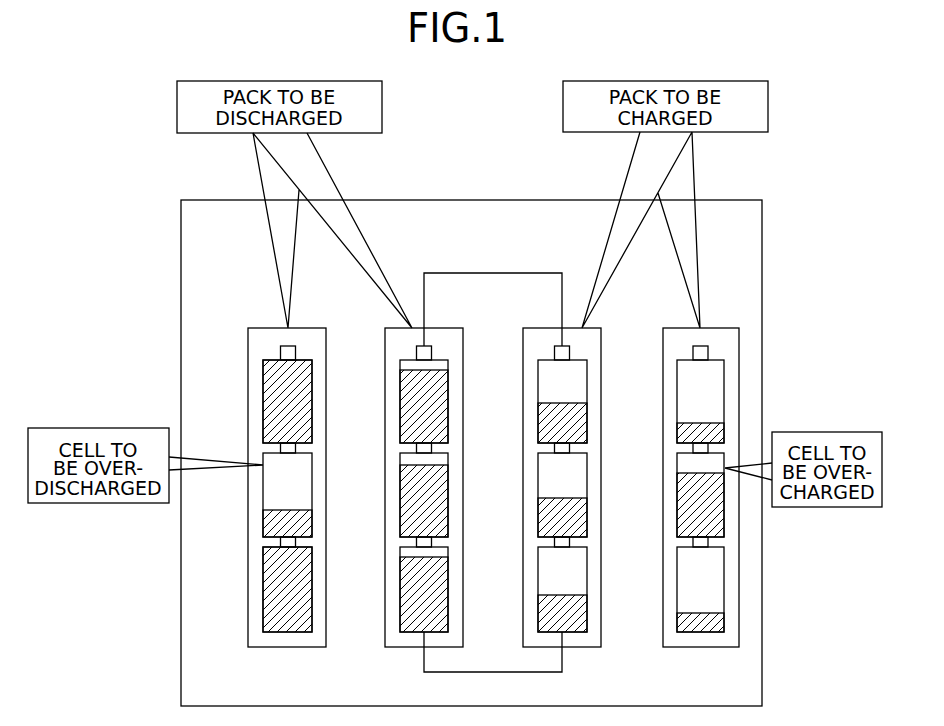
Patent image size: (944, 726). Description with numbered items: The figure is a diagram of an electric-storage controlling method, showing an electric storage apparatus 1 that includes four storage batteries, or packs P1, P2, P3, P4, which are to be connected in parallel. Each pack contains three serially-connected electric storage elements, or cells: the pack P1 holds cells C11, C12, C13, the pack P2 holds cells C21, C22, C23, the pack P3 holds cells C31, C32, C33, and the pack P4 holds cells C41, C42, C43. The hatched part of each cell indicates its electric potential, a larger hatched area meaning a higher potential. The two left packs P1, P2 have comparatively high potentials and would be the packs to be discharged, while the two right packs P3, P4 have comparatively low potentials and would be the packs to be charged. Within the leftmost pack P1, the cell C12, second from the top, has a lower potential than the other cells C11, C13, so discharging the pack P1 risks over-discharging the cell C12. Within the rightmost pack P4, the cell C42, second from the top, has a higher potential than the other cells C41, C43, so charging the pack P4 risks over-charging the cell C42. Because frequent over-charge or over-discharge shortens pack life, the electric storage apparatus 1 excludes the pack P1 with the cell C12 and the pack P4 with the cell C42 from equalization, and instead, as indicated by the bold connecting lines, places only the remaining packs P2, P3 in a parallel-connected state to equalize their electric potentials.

The electric storage apparatus 1 is at (545, 200).
The storage battery (pack) P1 is at (248, 344).
The storage battery (pack) P2 is at (385, 344).
The storage battery (pack) P3 is at (523, 344).
The storage battery (pack) P4 is at (663, 344).
The electric storage element (cell) C11 is at (263, 397).
The electric storage element (cell) C12 is at (263, 492).
The electric storage element (cell) C13 is at (263, 586).
The electric storage element (cell) C21 is at (400, 397).
The electric storage element (cell) C22 is at (400, 492).
The electric storage element (cell) C23 is at (400, 586).
The electric storage element (cell) C31 is at (538, 397).
The electric storage element (cell) C32 is at (538, 492).
The electric storage element (cell) C33 is at (538, 586).
The electric storage element (cell) C41 is at (677, 397).
The electric storage element (cell) C42 is at (677, 492).
The electric storage element (cell) C43 is at (677, 586).